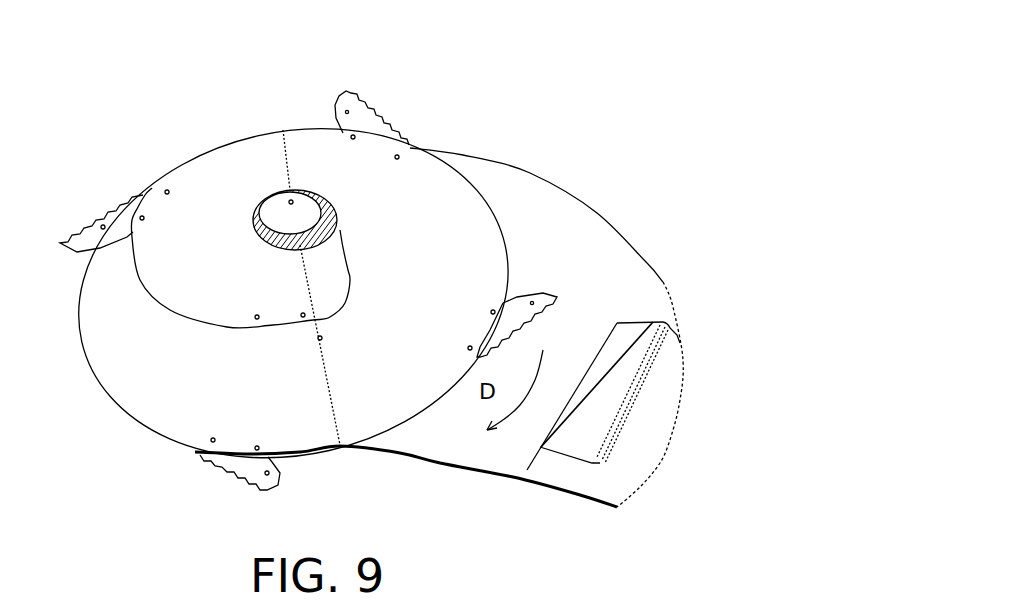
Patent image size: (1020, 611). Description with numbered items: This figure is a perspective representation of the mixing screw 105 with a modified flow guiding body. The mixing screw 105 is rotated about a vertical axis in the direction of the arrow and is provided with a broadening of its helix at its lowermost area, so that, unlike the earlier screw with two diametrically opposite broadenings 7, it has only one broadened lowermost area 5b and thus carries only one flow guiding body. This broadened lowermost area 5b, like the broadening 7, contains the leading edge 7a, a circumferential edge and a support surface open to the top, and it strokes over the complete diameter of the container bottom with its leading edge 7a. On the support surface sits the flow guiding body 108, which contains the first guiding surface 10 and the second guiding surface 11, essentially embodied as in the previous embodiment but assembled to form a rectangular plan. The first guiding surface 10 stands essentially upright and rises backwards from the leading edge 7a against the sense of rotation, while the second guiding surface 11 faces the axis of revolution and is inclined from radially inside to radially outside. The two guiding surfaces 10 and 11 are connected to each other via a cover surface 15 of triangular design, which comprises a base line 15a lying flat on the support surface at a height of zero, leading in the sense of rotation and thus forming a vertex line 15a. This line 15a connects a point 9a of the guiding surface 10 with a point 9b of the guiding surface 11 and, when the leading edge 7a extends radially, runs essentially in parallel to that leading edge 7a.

The mixing screw 105 is at (578, 148).
The broadened lowermost area of the helix 5b is at (663, 280).
The broadening 7 is at (643, 443).
The leading edge 7a is at (440, 463).
The point of the guiding surface 9a is at (600, 463).
The point of the guiding surface 9b is at (527, 470).
The first guiding surface 10 is at (678, 333).
The second guiding surface 11 is at (630, 333).
The cover surface 15 is at (585, 432).
The base line / vertex line 15a is at (573, 460).
The flow guiding body 108 is at (660, 350).